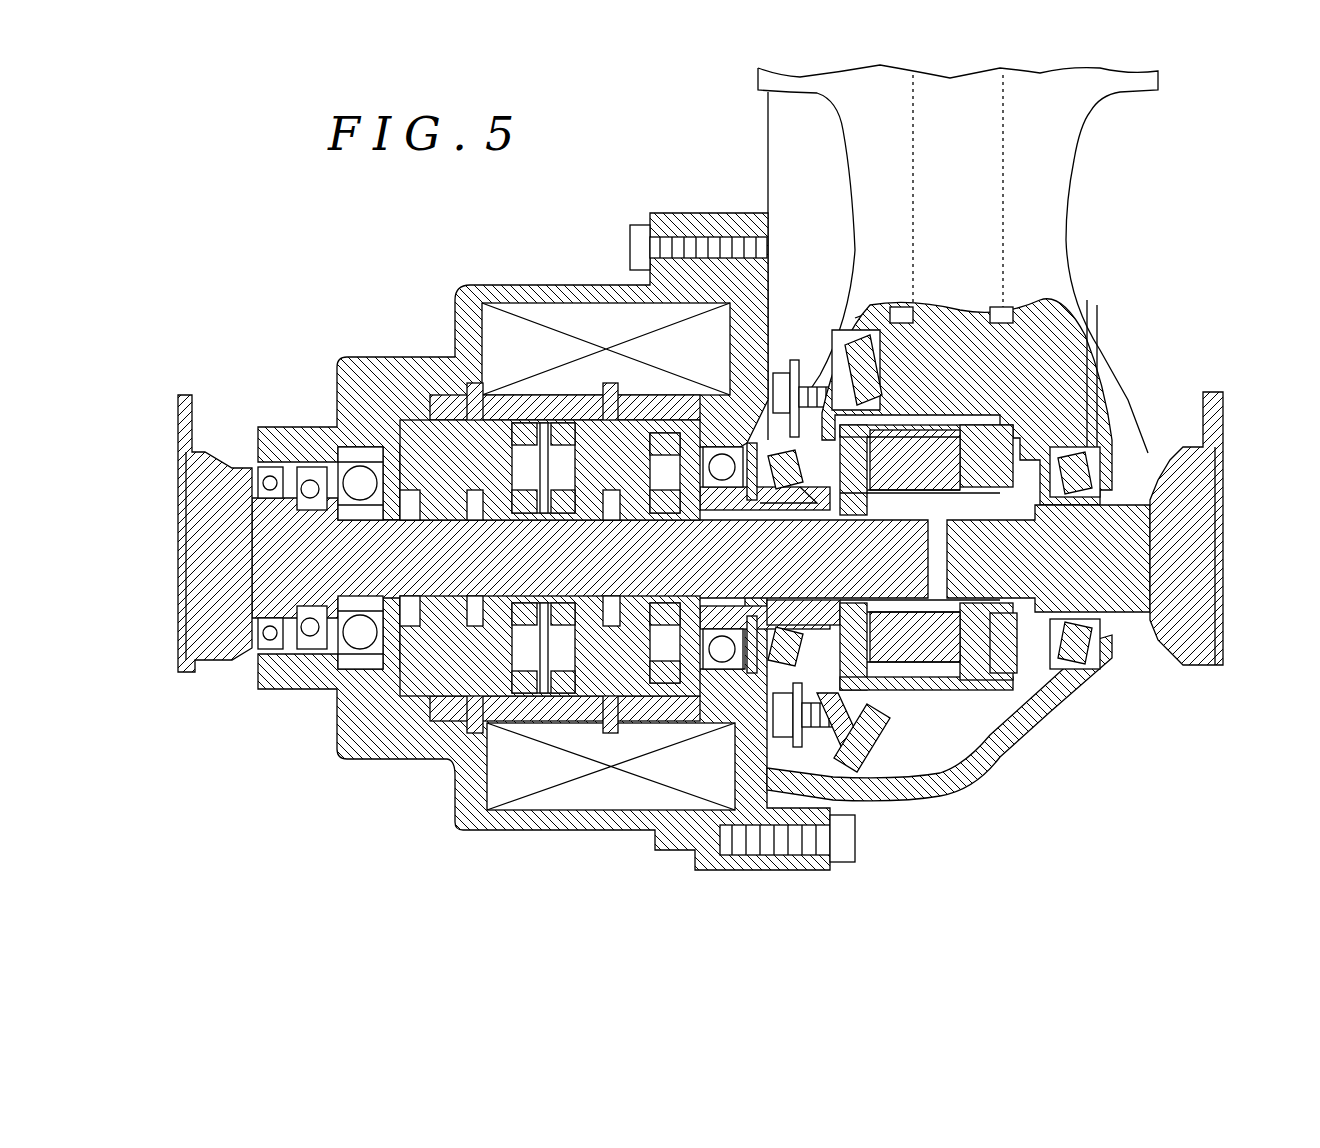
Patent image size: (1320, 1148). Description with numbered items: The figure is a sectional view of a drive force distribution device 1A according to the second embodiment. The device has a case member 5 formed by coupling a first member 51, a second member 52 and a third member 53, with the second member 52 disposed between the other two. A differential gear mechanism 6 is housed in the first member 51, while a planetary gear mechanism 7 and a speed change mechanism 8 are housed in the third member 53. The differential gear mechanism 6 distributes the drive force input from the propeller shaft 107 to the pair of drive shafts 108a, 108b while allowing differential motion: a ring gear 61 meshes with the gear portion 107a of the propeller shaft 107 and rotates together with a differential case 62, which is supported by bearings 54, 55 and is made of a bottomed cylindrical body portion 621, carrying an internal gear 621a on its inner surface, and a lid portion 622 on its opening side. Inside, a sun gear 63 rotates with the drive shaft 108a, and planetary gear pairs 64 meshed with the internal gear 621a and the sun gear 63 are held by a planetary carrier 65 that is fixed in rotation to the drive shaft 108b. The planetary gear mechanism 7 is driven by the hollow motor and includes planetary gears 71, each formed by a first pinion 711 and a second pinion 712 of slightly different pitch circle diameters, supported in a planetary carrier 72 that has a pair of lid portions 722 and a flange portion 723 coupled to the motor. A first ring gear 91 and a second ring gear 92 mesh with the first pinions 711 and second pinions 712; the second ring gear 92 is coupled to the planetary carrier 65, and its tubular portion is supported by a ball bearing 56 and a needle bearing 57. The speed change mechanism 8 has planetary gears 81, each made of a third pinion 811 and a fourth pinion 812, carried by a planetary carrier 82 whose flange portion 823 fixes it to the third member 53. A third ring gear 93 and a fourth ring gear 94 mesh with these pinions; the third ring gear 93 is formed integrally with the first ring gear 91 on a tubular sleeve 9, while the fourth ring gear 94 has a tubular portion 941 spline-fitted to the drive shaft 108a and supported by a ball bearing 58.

The drive force distribution device 1A is at (434, 241).
The case member 5 is at (751, 883).
The first member 51 is at (790, 858).
The second member 52 is at (728, 860).
The third member 53 is at (667, 873).
The bearing 54 is at (1085, 462).
The bearing 55 is at (782, 385).
The ball bearing 56 is at (720, 672).
The needle bearing 57 is at (716, 512).
The ball bearing 58 is at (350, 450).
The differential gear mechanism 6 is at (1054, 421).
The ring gear 61 is at (845, 362).
The differential case 62 is at (940, 720).
The body portion 621 is at (858, 700).
The internal gear 621a is at (1000, 700).
The lid portion 622 is at (872, 712).
The sun gear 63 is at (842, 505).
The planetary gear pair 64 is at (928, 440).
The planetary carrier 65 is at (1075, 590).
The planetary gear mechanism 7 is at (772, 345).
The planetary gear 71 is at (655, 560).
The first pinion 711 is at (590, 490).
The second pinion 712 is at (665, 470).
The planetary carrier 72 is at (722, 406).
The lid portion 722 is at (558, 668).
The flange portion 723 is at (611, 398).
The speed change mechanism 8 is at (372, 398).
The planetary gear 81 is at (520, 560).
The third pinion 811 is at (520, 470).
The fourth pinion 812 is at (445, 505).
The planetary carrier 82 is at (408, 400).
The flange portion 823 is at (468, 360).
The sleeve 9 is at (600, 236).
The first ring gear 91 is at (608, 395).
The second ring gear 92 is at (642, 398).
The third ring gear 93 is at (478, 395).
The fourth ring gear 94 is at (448, 420).
The tubular portion 941 is at (296, 462).
The propeller shaft 107 is at (1005, 118).
The gear portion 107a is at (875, 312).
The drive shaft 108a is at (242, 497).
The drive shaft 108b is at (1160, 490).